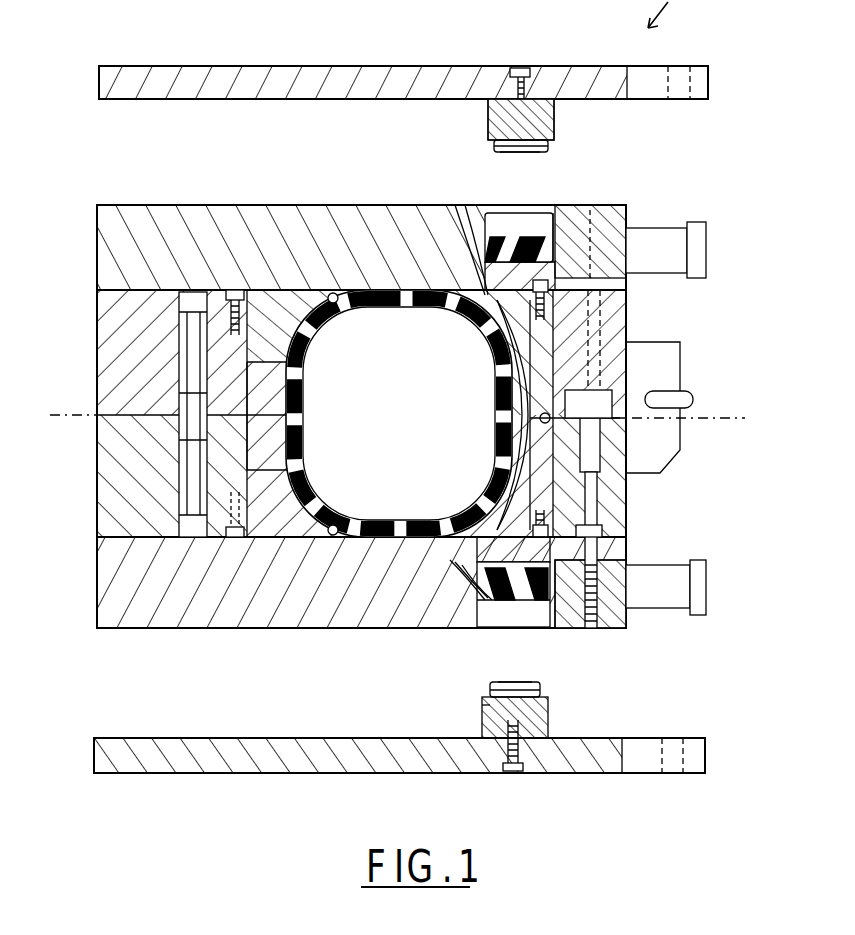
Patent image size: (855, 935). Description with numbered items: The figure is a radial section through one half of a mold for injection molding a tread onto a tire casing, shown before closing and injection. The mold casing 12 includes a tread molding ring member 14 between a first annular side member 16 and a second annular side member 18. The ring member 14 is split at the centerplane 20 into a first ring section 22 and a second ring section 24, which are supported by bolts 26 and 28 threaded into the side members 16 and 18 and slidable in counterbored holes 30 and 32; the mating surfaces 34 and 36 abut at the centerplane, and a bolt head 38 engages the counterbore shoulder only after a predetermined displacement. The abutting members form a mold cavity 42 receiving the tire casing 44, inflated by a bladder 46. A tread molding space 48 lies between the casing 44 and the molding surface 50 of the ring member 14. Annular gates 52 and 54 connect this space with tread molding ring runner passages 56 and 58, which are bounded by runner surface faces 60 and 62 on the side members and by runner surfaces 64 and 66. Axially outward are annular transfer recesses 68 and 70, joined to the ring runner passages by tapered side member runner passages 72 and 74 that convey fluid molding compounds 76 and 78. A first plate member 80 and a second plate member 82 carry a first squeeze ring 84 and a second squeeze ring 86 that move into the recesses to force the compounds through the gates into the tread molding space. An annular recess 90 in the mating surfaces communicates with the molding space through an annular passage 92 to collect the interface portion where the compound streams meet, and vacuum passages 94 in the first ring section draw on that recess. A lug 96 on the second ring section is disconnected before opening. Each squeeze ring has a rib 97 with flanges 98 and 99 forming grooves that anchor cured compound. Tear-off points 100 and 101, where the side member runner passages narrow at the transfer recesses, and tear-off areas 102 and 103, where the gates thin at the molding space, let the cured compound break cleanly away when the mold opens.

The mold casing 12 is at (645, 342).
The tread molding ring member 14 is at (640, 346).
The first annular side member 16 is at (97, 318).
The second annular side member 18 is at (97, 590).
The centerplane 20 is at (78, 418).
The first ring section 22 is at (655, 362).
The second ring section 24 is at (640, 520).
The bolts 26 is at (610, 318).
The bolts 28 is at (610, 530).
The holes 30 is at (615, 290).
The holes 32 is at (600, 490).
The mating surface 34 is at (660, 455).
The mating surface 36 is at (692, 396).
The bolt head 38 is at (620, 470).
The mold cavity 42 is at (354, 378).
The tire casing 44 is at (390, 300).
The bladder 46 is at (292, 432).
The tread molding space 48 is at (515, 452).
The molding surface 50 is at (520, 385).
The annular gate 52 is at (500, 302).
The annular gate 54 is at (445, 525).
The tread molding ring runner passage 56 is at (476, 294).
The tread molding ring runner passage 58 is at (450, 598).
The runner surface face 60 is at (482, 340).
The runner surface face 62 is at (492, 598).
The runner surface 64 is at (514, 250).
The runner surface 66 is at (540, 600).
The annular transfer recess 68 is at (576, 230).
The annular transfer recess 70 is at (565, 628).
The side member runner passages 72 is at (500, 258).
The side member runner passages 74 is at (500, 600).
The fluid molding compound 76 is at (549, 255).
The fluid molding compound 78 is at (515, 602).
The first plate member 80 is at (556, 70).
The second plate member 82 is at (575, 774).
The first squeeze ring 84 is at (552, 122).
The second squeeze ring 86 is at (548, 712).
The annular recess 90 is at (522, 428).
The annular passage 92 is at (540, 418).
The vacuum passages 94 is at (640, 425).
The lug 96 is at (655, 342).
The rib 97 is at (548, 150).
The flange 98 is at (492, 146).
The flange 99 is at (545, 152).
The tear-off point 100 is at (484, 292).
The tear-off point 101 is at (470, 560).
The tear-off area 102 is at (502, 330).
The tear-off area 103 is at (505, 520).